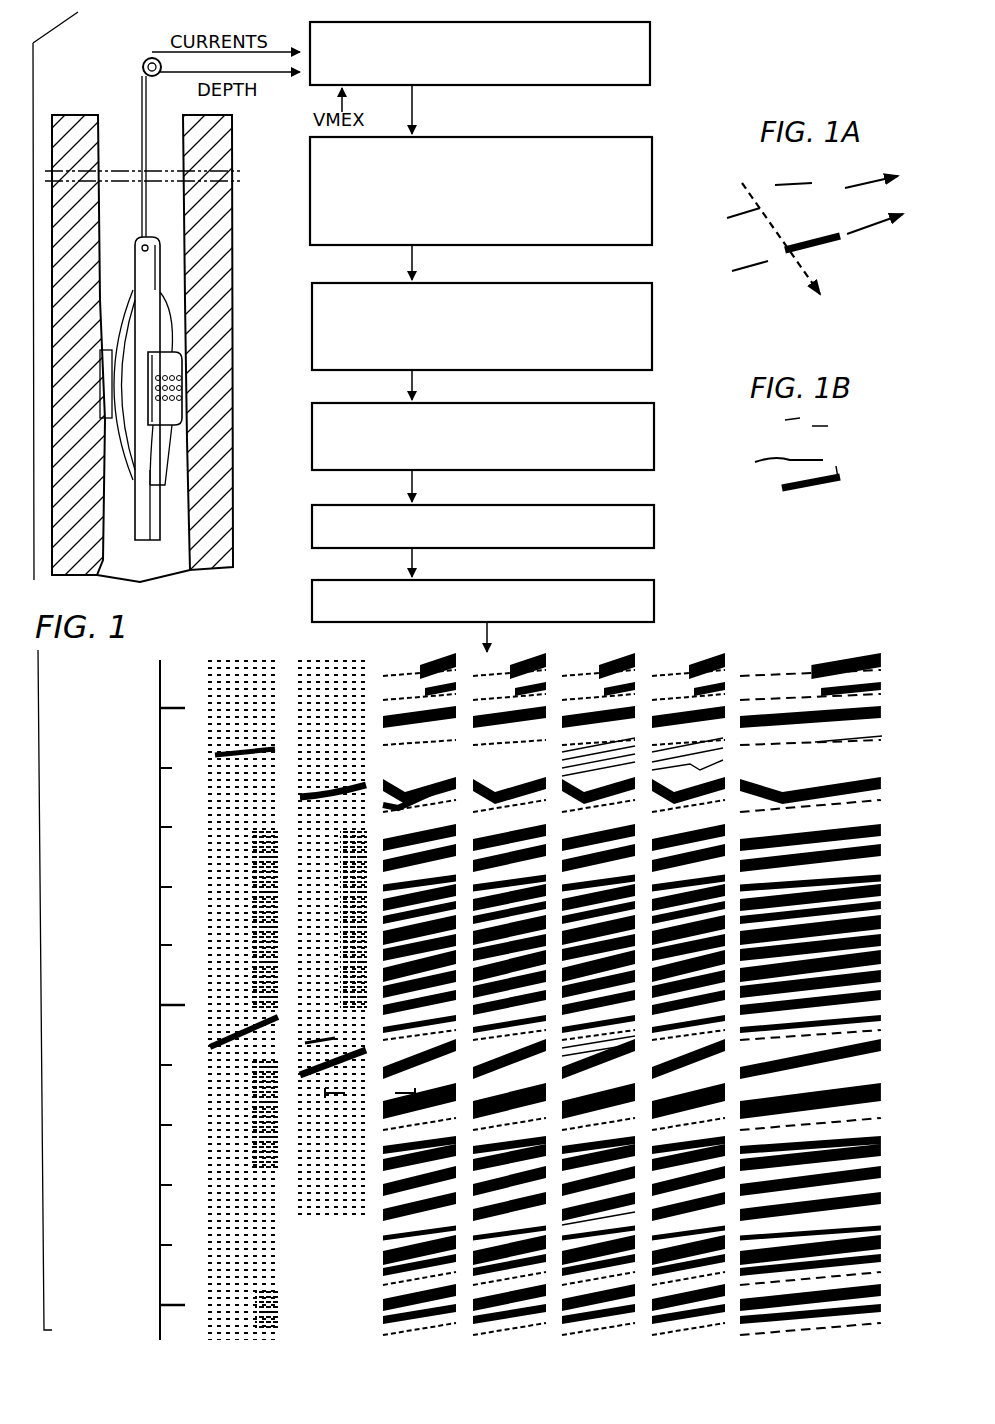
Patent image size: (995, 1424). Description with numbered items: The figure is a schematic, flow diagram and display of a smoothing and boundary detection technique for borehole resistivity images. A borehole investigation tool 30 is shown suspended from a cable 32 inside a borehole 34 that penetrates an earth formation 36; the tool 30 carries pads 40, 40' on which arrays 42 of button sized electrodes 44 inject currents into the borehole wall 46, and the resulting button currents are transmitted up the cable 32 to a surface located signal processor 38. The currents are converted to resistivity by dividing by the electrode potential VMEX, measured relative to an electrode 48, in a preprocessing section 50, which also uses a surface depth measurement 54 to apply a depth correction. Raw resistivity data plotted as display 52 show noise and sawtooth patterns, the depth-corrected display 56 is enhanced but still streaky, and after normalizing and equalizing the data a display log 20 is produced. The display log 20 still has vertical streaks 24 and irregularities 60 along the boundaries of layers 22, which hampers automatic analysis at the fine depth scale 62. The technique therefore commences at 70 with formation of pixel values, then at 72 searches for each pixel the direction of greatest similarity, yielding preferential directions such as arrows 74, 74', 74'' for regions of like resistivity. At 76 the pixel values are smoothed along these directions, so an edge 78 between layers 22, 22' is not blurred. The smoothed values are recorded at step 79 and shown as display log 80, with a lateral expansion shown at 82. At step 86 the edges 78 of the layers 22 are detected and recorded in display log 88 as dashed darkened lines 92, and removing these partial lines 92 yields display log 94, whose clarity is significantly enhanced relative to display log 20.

In FIG. 1, the display log 20 is at (395, 654).
In FIG. 1, the layers 22 is at (395, 810).
In FIG. 1B, the layers 22 is at (843, 481).
In FIG. 1B, the layer 22' is at (775, 446).
In FIG. 1, the vertical streaks 24 is at (370, 1097).
In FIG. 1, the borehole investigation tool 30 is at (140, 262).
In FIG. 1, the cable 32 is at (138, 92).
In FIG. 1, the borehole 34 is at (174, 156).
In FIG. 1, the earth formation 36 is at (215, 203).
In FIG. 1, the signal processor 38 is at (672, 110).
In FIG. 1, the pad 40 is at (208, 388).
In FIG. 1, the pad 40' is at (96, 385).
In FIG. 1, the array 42 is at (175, 416).
In FIG. 1, the button electrodes 44 is at (180, 392).
In FIG. 1, the borehole wall 46 is at (178, 272).
In FIG. 1, the electrode 48 is at (146, 243).
In FIG. 1, the preprocessing section 50 is at (583, 86).
In FIG. 1, the display 52 is at (235, 654).
In FIG. 1, the surface depth measurement 54 is at (158, 78).
In FIG. 1, the display 56 is at (330, 654).
In FIG. 1, the boundary irregularities 60 is at (395, 1292).
In FIG. 1, the fine scale 62 is at (160, 860).
In FIG. 1, the pixel value formation step 70 is at (630, 137).
In FIG. 1, the similarity direction search step 72 is at (595, 283).
In FIG. 1A, the preferential direction arrow 74 is at (812, 207).
In FIG. 1A, the preferential direction arrow 74' is at (876, 239).
In FIG. 1A, the preferential direction arrow 74'' is at (781, 243).
In FIG. 1, the smoothing step 76 is at (595, 403).
In FIG. 1B, the edge 78 is at (842, 460).
In FIG. 1, the recording step 79 is at (595, 580).
In FIG. 1, the display log 80 is at (505, 654).
In FIG. 1, the laterally expanded display log 82 is at (790, 654).
In FIG. 1, the edge detection step 86 is at (595, 505).
In FIG. 1, the display log 88 is at (580, 654).
In FIG. 1, the dashed darkened lines 92 is at (725, 740).
In FIG. 1, the display log 94 is at (695, 654).